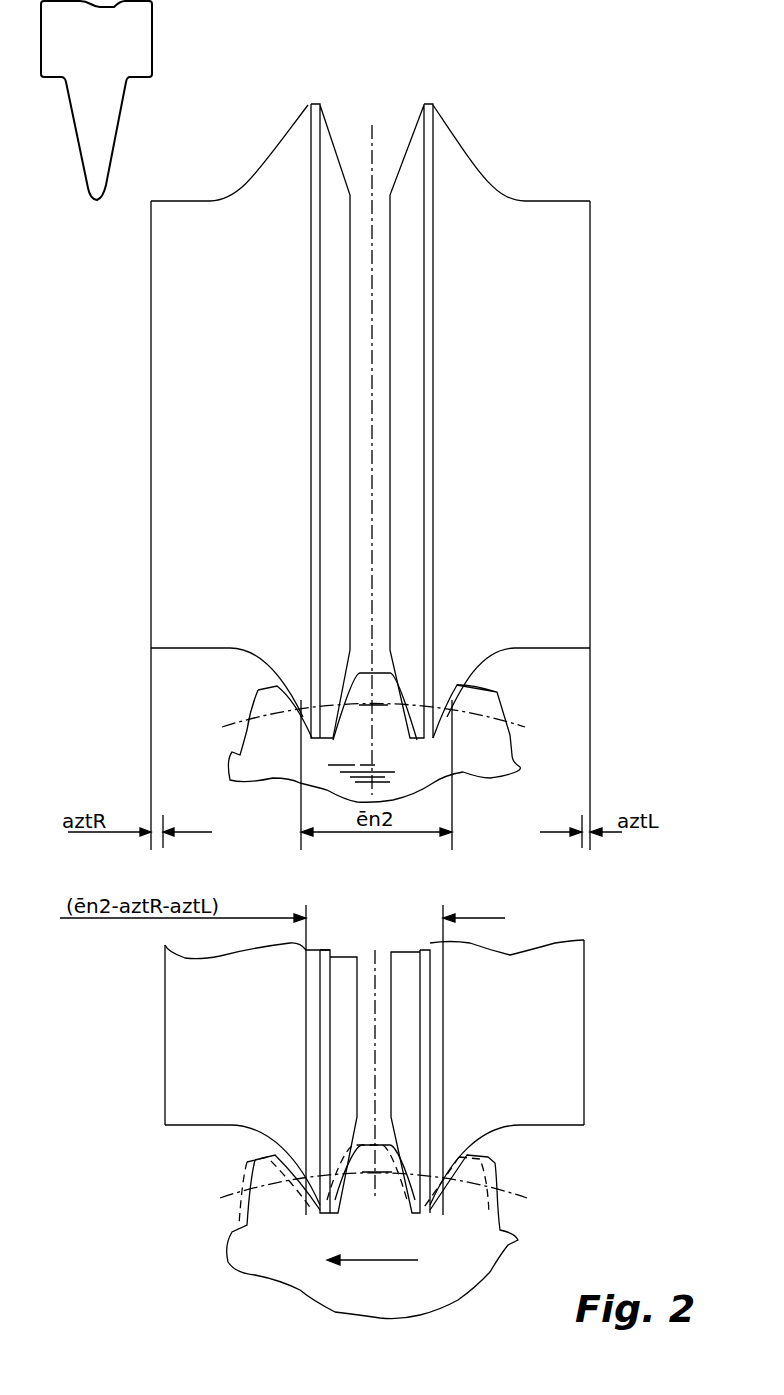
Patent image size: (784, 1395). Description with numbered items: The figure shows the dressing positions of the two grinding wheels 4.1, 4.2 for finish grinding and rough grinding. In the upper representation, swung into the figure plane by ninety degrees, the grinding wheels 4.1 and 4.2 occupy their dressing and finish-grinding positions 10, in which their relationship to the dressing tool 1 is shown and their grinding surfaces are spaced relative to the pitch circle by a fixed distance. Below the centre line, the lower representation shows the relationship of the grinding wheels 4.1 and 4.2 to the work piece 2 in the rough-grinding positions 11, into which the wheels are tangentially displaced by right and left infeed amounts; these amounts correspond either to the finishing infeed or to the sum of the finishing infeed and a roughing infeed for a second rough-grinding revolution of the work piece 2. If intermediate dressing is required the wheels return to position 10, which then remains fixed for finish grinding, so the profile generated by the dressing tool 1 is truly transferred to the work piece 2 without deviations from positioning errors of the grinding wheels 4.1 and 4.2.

The dressing tool 1 is at (88, 123).
The work piece 2 is at (488, 708).
The grinding wheel 4.1 is at (167, 372).
The grinding wheel 4.2 is at (572, 362).
The dressing/finish-grinding position 10 is at (151, 538).
The rough-grinding position 11 is at (165, 1080).